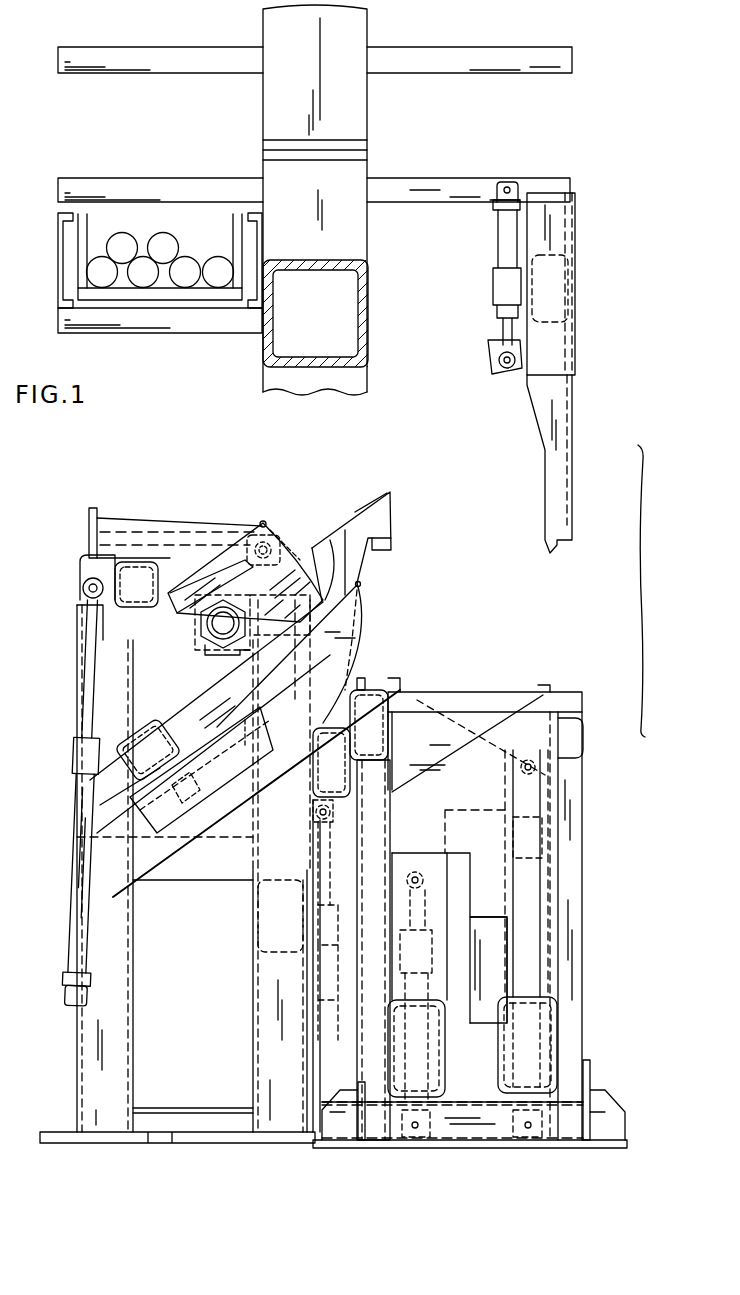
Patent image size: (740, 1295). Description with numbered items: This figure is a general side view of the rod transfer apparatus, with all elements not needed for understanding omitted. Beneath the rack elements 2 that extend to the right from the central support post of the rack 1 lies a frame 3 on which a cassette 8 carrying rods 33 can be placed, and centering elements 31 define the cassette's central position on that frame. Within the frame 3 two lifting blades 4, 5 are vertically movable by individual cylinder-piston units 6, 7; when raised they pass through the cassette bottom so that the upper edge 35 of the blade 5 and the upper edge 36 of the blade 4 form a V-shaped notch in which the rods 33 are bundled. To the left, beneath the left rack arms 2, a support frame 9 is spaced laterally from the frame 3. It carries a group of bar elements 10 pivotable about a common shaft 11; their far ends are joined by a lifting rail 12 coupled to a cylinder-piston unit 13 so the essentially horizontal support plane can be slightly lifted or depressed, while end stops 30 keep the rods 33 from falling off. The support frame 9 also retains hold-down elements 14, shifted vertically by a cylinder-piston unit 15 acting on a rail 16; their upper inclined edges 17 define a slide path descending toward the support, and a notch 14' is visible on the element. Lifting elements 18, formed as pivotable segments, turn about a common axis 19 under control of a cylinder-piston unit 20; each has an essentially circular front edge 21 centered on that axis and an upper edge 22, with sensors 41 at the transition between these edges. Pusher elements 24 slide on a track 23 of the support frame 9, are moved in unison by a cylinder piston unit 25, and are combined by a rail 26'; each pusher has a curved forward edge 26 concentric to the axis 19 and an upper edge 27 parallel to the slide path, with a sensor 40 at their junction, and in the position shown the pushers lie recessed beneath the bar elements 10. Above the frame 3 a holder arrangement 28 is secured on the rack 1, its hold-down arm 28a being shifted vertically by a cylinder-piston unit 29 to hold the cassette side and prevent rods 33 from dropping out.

The rack 1 is at (345, 113).
The rack elements 2 is at (113, 190).
The cassette 8 is at (58, 262).
The rods 33 is at (166, 248).
The cylinder-piston unit 29 is at (500, 237).
The holder arrangement 28 is at (596, 420).
The hold-down arm 28a is at (575, 470).
The end stops 30 is at (93, 506).
The bar elements 10 is at (133, 530).
The pusher elements 24 is at (198, 576).
The upper edge 27 is at (230, 552).
The sensor 40 is at (263, 523).
The common axis or shaft 11 is at (275, 548).
The forward edge 26 is at (291, 558).
The upper edge 22 is at (330, 580).
The upper inclined edge 17 is at (355, 510).
The hold-down elements 14 is at (372, 537).
The wedge notch 14' is at (402, 556).
The sensors 41 is at (360, 584).
The front edge 21 is at (365, 605).
The lifting elements 18 is at (358, 632).
The centering elements 31 is at (365, 680).
The rail 16 is at (340, 748).
The upper edge 35 is at (445, 740).
The lifting blade 5 is at (477, 706).
The upper edge 36 is at (505, 696).
The lifting blade 4 is at (540, 737).
The lifting rail 12 is at (135, 598).
The common axis 19 is at (221, 628).
The rail 26' is at (148, 734).
The track 23 is at (120, 809).
The cylinder piston unit 25 is at (177, 810).
The cylinder-piston unit 20 is at (178, 857).
The cylinder-piston unit 13 is at (106, 933).
The support frame 9 is at (108, 1048).
The cylinder-piston unit 15 is at (330, 997).
The cylinder-piston unit 7 is at (408, 985).
The cylinder-piston unit 6 is at (530, 980).
The frame 3 is at (572, 949).